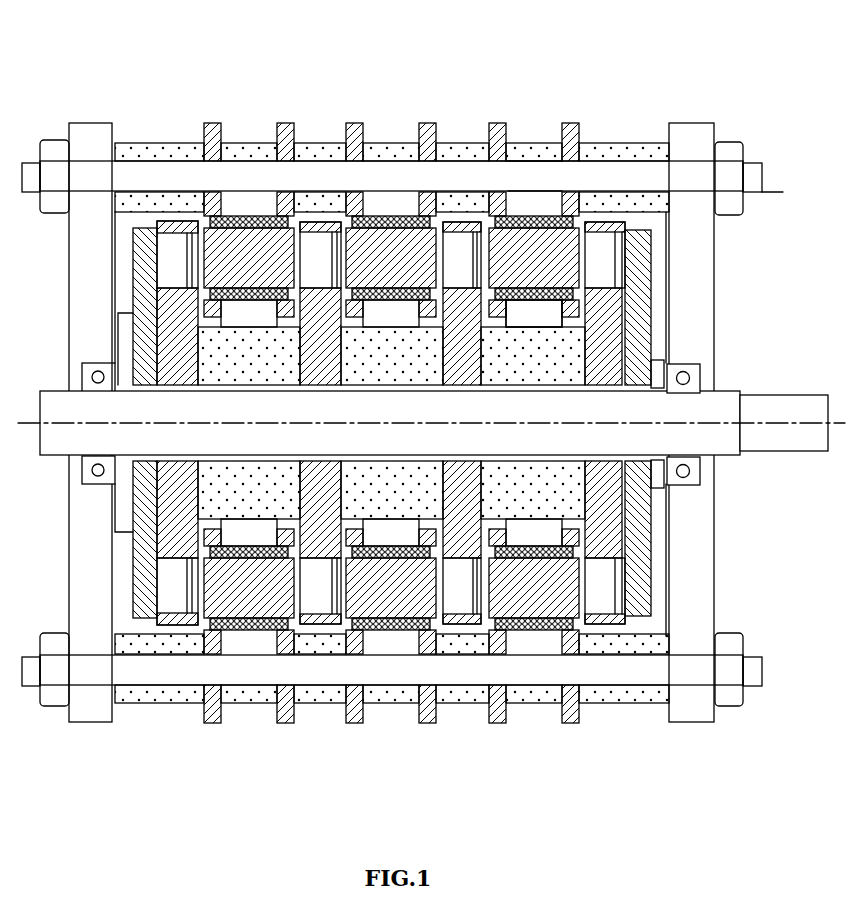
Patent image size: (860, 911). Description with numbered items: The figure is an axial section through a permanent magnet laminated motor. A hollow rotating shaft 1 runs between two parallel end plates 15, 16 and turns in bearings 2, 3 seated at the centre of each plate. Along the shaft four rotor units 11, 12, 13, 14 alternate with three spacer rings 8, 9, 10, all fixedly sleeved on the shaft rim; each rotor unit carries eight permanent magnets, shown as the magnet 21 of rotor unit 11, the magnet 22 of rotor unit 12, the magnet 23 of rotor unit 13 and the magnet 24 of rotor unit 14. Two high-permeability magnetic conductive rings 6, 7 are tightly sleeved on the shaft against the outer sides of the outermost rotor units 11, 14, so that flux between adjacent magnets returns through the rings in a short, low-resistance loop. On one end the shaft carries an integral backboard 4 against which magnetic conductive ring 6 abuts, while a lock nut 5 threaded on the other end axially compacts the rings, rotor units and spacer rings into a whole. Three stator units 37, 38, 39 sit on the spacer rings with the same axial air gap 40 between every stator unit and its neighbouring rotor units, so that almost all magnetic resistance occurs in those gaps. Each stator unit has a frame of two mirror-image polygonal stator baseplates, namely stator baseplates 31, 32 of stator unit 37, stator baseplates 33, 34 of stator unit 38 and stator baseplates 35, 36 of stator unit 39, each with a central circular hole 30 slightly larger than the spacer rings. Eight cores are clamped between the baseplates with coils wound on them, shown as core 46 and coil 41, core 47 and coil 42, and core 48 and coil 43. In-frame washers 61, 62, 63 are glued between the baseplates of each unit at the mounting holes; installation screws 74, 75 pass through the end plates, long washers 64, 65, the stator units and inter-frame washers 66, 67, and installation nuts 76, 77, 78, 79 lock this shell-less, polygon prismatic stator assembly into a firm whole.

The rotating shaft 1 is at (78, 434).
The bearing 2 is at (97, 468).
The bearing 3 is at (687, 385).
The backboard 4 is at (127, 337).
The lock nut 5 is at (657, 486).
The magnetic conductive ring 6 is at (143, 282).
The magnetic conductive ring 7 is at (633, 553).
The spacer ring 8 is at (242, 367).
The spacer ring 9 is at (555, 368).
The spacer ring 10 is at (647, 358).
The rotor unit 11 is at (182, 315).
The rotor unit 12 is at (320, 313).
The rotor unit 13 is at (464, 320).
The rotor unit 14 is at (604, 230).
The end plate 15 is at (93, 567).
The end plate 16 is at (685, 582).
The magnet 21 is at (177, 257).
The magnet 22 is at (310, 258).
The magnet 23 is at (550, 185).
The magnet 24 is at (622, 230).
The circular hole 30 is at (572, 322).
The stator baseplate 31 is at (213, 123).
The stator baseplate 32 is at (283, 123).
The stator baseplate 33 is at (353, 123).
The stator baseplate 34 is at (428, 123).
The stator baseplate 35 is at (498, 123).
The stator baseplate 36 is at (571, 123).
The stator unit 37 is at (248, 693).
The stator unit 38 is at (397, 693).
The stator unit 39 is at (538, 693).
The axial air gap 40 is at (582, 263).
The coil 41 is at (250, 215).
The coil 42 is at (401, 215).
The coil 43 is at (540, 215).
The core 46 is at (249, 166).
The core 47 is at (391, 167).
The core 48 is at (534, 171).
The in-frame washer 61 is at (212, 723).
The in-frame washer 62 is at (397, 693).
The in-frame washer 63 is at (566, 702).
The long washer 64 is at (157, 693).
The long washer 65 is at (600, 700).
The inter-frame washer 66 is at (317, 695).
The inter-frame washer 67 is at (460, 695).
The installation screw 74 is at (155, 176).
The installation screw 75 is at (133, 672).
The installation nut 76 is at (54, 138).
The installation nut 77 is at (723, 150).
The installation nut 78 is at (50, 698).
The installation nut 79 is at (725, 700).